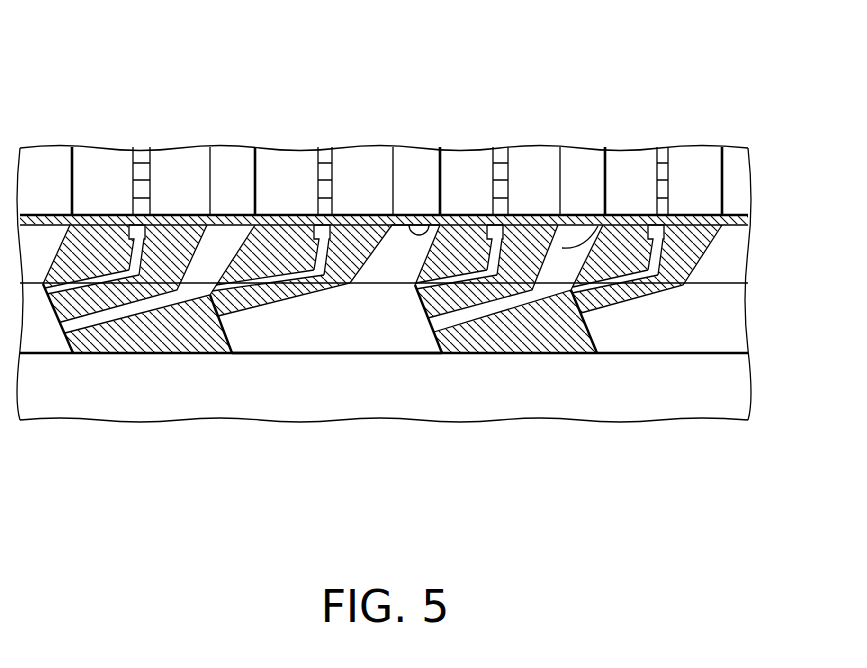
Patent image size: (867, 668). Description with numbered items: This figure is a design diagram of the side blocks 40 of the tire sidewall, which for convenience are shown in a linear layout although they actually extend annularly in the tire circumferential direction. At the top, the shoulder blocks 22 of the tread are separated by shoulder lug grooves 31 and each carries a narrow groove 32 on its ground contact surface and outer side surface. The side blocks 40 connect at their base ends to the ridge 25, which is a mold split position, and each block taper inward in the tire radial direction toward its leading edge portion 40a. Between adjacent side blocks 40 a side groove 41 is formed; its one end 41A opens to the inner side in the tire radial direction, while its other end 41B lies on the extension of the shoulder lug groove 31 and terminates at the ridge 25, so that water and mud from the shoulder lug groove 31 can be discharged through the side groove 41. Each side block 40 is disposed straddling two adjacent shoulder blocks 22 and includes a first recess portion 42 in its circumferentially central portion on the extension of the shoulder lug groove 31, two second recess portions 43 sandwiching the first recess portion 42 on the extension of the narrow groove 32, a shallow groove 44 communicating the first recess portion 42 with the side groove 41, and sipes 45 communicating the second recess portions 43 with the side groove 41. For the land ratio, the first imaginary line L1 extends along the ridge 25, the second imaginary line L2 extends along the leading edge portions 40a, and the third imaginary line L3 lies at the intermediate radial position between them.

The shoulder block 22 is at (178, 160).
The ridge 25 is at (385, 80).
The shoulder lug groove 31 is at (60, 147).
The narrow groove 32 is at (140, 147).
The side block 40 is at (193, 340).
The leading edge portion 40a is at (142, 353).
The side groove 41 is at (363, 340).
The one end of side groove 41A is at (258, 343).
The other end of side groove 41B is at (428, 215).
The first recess portion 42 is at (233, 243).
The second recess portion 43 is at (134, 224).
The shallow groove 44 is at (105, 318).
The sipe 45 is at (40, 292).
The first imaginary line L1 is at (707, 215).
The second imaginary line L2 is at (592, 283).
The third imaginary line L3 is at (716, 283).